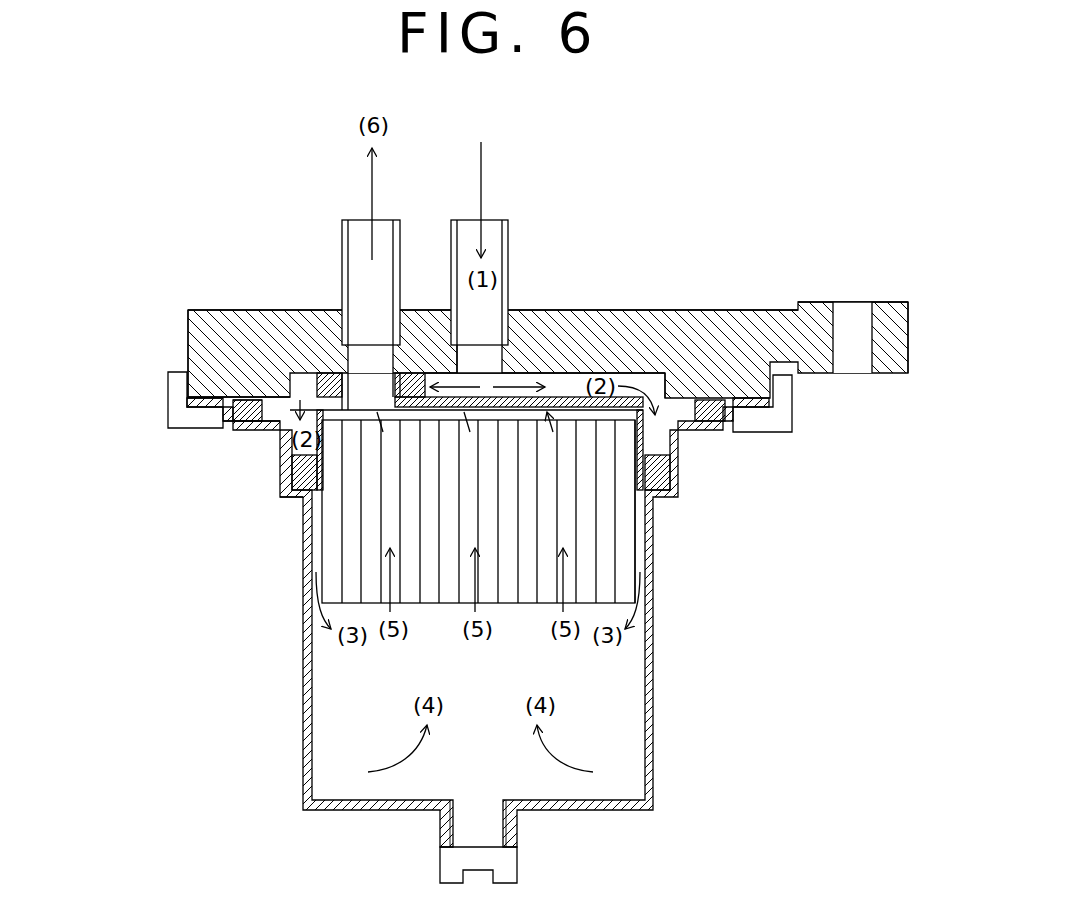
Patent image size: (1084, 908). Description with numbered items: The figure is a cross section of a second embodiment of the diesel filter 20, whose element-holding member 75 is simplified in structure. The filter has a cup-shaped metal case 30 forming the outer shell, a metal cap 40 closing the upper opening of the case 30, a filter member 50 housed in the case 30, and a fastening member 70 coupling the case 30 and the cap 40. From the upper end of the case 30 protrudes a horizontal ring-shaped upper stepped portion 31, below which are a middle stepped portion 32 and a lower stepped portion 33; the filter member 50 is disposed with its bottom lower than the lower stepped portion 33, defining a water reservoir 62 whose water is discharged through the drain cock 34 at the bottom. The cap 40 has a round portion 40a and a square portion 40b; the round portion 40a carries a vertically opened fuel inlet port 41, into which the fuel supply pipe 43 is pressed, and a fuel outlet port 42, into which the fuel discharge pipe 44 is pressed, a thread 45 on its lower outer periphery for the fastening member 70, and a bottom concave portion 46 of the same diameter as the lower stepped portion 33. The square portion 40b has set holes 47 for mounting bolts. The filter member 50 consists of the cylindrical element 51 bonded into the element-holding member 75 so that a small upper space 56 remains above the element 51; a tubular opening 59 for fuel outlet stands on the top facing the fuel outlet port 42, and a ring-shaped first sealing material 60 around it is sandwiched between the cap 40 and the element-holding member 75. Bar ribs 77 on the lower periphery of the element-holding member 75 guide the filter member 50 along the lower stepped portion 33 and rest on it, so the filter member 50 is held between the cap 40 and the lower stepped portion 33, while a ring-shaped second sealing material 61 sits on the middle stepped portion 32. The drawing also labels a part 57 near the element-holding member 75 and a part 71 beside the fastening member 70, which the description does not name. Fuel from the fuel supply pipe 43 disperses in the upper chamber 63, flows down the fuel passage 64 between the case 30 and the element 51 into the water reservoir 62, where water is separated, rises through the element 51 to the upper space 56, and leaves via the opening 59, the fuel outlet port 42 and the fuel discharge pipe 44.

The diesel filter 20 is at (884, 292).
The case 30 is at (658, 672).
The upper stepped portion 31 is at (220, 403).
The middle stepped portion 32 is at (243, 429).
The lower stepped portion 33 is at (295, 497).
The drain cock 34 is at (504, 865).
The cap 40 is at (226, 301).
The round portion 40a is at (189, 309).
The square portion 40b is at (899, 301).
The fuel inlet port 41 is at (503, 340).
The fuel outlet port 42 is at (318, 371).
The fuel supply pipe 43 is at (507, 222).
The fuel discharge pipe 44 is at (342, 221).
The thread 45 is at (190, 397).
The concave portion 46 is at (668, 375).
The set holes 47 is at (853, 320).
The filter member 50 is at (640, 553).
The element 51 is at (627, 510).
The upper space 56 is at (566, 401).
The outer cylinder 57 is at (681, 443).
The opening for fuel outlet 59 is at (410, 371).
The first sealing material 60 is at (261, 398).
The second sealing material 61 is at (232, 412).
The water reservoir 62 is at (332, 733).
The upper chamber 63 is at (633, 379).
The fuel passage 64 is at (318, 555).
The fastening member 70 is at (784, 410).
The retainer 71 is at (186, 397).
The element-holding member 75 is at (557, 391).
The bar ribs 77 is at (297, 475).